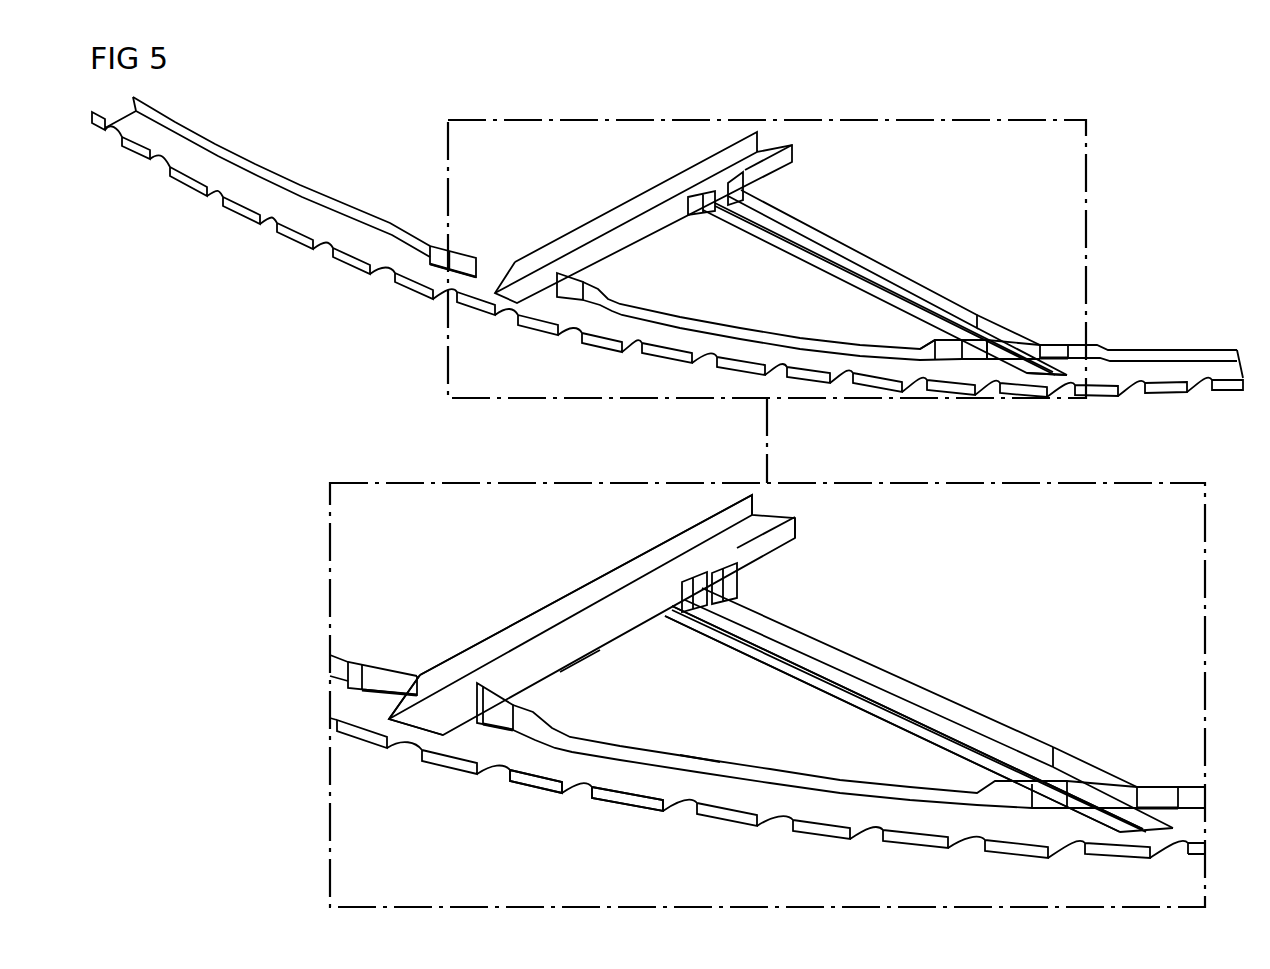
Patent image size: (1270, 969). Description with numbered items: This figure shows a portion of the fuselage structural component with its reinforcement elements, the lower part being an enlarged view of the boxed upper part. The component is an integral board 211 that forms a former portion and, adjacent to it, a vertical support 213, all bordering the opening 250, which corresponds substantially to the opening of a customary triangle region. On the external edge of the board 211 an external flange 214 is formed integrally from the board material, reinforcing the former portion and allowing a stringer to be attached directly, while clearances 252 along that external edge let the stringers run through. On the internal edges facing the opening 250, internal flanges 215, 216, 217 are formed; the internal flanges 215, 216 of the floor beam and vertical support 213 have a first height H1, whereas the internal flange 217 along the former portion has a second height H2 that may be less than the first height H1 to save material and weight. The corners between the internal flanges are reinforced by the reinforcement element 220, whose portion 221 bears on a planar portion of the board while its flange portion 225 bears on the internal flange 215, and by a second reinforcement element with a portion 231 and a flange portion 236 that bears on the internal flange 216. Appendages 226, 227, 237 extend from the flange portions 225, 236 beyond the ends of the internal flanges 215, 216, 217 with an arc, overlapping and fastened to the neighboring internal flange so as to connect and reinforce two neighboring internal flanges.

The board 211 is at (322, 232).
The vertical support 213 is at (878, 240).
The external flange 214 is at (237, 209).
The internal flange 215 is at (590, 636).
The internal flange 216 is at (1040, 735).
The internal flange 217 is at (447, 262).
The reinforcement element 220 is at (626, 186).
The portion 221 is at (418, 708).
The flange portion 225 is at (486, 630).
The appendage 226 is at (708, 604).
The appendage 227 is at (483, 266).
The portion 231 is at (1042, 377).
The flange portion 236 is at (1013, 333).
The appendage 237 is at (1056, 353).
The opening 250 is at (850, 708).
The clearances 252 is at (686, 812).
The first height H1 is at (580, 667).
The second height H2 is at (704, 750).